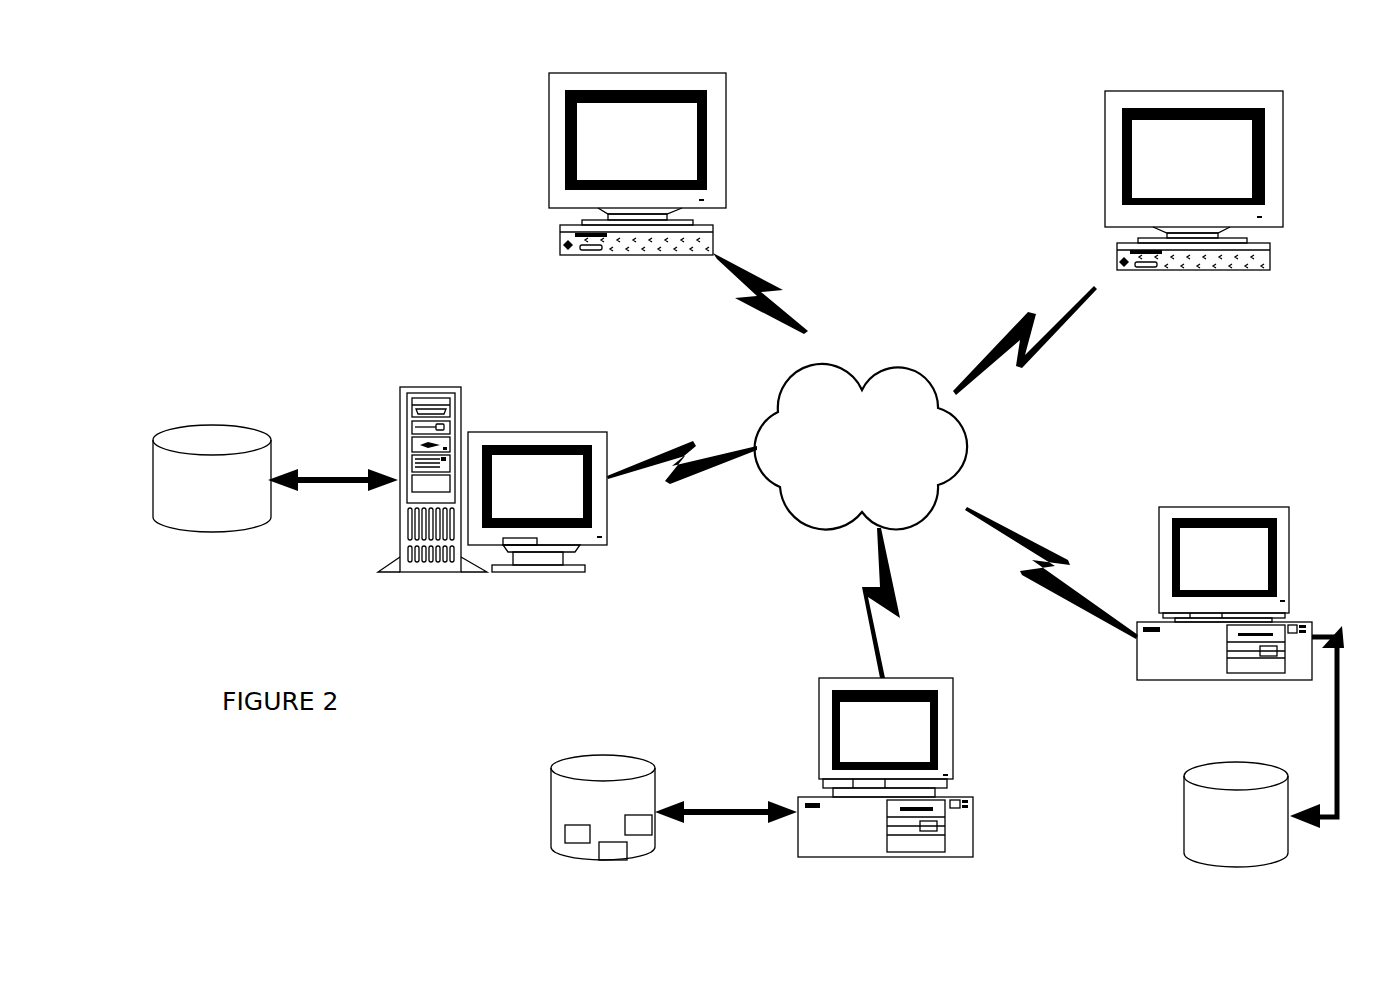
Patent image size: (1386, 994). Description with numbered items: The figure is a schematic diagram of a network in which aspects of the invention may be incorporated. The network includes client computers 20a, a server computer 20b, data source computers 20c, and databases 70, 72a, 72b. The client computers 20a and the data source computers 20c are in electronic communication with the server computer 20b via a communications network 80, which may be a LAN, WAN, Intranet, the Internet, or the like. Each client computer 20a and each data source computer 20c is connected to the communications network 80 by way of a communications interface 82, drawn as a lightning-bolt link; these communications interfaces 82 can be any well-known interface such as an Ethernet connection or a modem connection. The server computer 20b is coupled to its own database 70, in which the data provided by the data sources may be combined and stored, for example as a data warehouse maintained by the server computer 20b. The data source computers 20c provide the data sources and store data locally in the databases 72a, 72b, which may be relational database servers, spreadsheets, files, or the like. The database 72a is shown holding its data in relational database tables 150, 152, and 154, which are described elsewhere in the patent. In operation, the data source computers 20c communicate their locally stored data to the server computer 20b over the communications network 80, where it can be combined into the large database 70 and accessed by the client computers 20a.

The client computers 20a is at (726, 161).
The server computer 20b is at (423, 387).
The data source computers 20c is at (907, 678).
The database 70 is at (207, 422).
The database 72a is at (623, 783).
The database 72b is at (1217, 763).
The communications network 80 is at (829, 366).
The communications interfaces 82 is at (782, 290).
The relational database table 150 is at (565, 836).
The relational database table 152 is at (612, 860).
The relational database table 154 is at (640, 835).